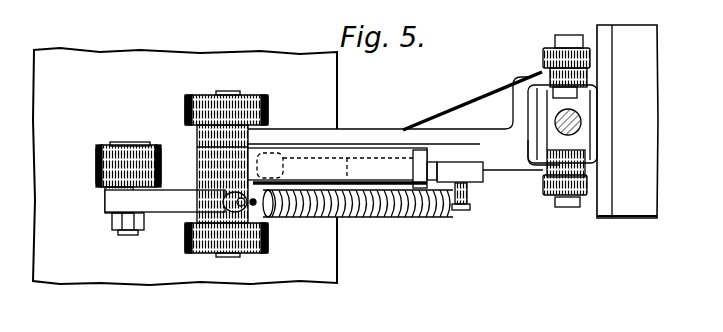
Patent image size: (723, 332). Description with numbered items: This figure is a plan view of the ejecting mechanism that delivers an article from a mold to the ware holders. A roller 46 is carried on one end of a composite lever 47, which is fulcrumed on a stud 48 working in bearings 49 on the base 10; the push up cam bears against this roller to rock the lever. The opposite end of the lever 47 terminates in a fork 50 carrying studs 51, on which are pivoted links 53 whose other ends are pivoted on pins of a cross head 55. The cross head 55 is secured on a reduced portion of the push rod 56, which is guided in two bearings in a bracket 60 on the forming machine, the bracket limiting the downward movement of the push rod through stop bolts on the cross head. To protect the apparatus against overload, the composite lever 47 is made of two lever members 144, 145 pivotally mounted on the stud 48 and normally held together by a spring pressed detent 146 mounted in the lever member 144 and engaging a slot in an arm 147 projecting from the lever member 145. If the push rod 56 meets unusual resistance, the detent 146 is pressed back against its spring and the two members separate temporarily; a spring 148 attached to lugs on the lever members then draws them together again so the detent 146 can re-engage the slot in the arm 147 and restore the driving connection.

The base 10 is at (58, 271).
The roller 46 is at (100, 166).
The composite lever 47 is at (173, 201).
The stud 48 is at (223, 95).
The bearings 49 is at (256, 95).
The fork 50 is at (523, 97).
The studs 51 is at (563, 36).
The links 53 is at (587, 183).
The cross head 55 is at (553, 135).
The push rod 56 is at (555, 122).
The bracket 60 is at (648, 197).
The lever member 144 is at (200, 155).
The lever member 145 is at (457, 138).
The spring pressed detent 146 is at (387, 160).
The arm 147 is at (477, 183).
The spring 148 is at (437, 220).